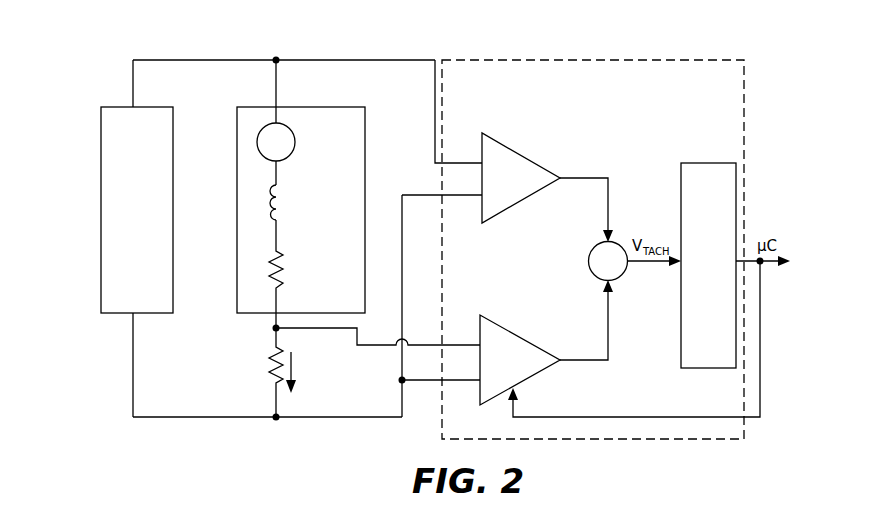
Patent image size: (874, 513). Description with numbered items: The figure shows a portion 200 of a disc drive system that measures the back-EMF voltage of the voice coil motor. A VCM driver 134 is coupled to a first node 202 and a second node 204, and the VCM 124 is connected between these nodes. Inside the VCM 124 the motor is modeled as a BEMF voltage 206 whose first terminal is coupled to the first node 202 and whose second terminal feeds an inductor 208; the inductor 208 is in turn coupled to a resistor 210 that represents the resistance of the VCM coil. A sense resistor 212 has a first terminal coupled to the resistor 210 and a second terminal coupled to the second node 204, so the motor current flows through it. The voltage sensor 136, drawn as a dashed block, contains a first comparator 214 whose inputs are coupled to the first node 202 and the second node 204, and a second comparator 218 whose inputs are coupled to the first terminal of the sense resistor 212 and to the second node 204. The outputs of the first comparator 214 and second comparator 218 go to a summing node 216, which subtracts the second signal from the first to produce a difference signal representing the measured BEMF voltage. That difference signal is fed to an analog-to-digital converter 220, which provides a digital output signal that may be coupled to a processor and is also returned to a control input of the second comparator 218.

The portion of the disc drive system 200 is at (96, 13).
The first node 202 is at (236, 59).
The second node 204 is at (236, 417).
The VCM driver 134 is at (125, 107).
The VCM 124 is at (260, 107).
The BEMF voltage 206 is at (258, 148).
The inductor 208 is at (268, 200).
The resistor 210 is at (268, 270).
The sense resistor 212 is at (270, 358).
The voltage sensor 136 is at (642, 60).
The first comparator 214 is at (520, 155).
The summing node 216 is at (589, 261).
The second comparator 218 is at (500, 326).
The analog-to-digital converter 220 is at (708, 163).